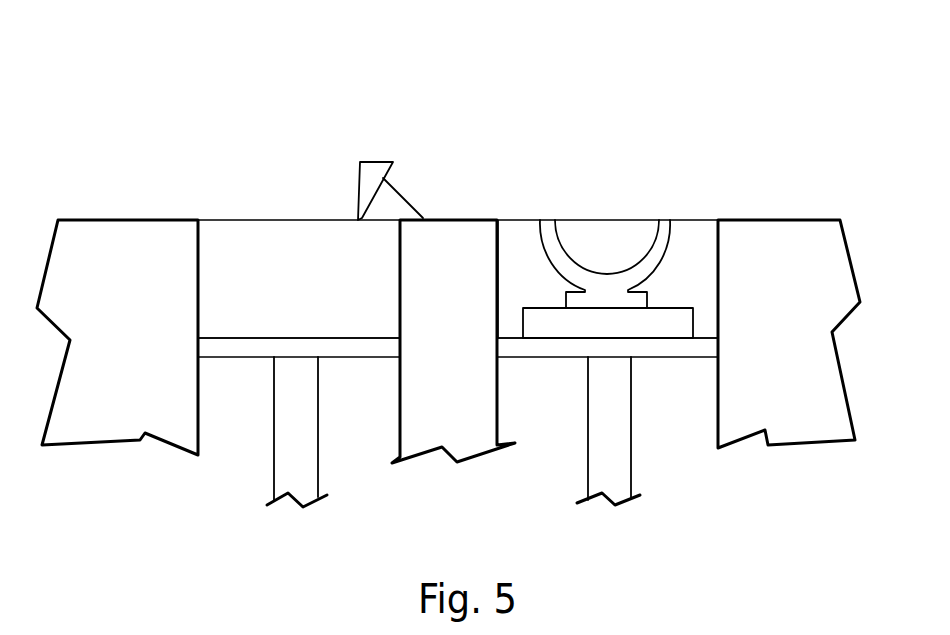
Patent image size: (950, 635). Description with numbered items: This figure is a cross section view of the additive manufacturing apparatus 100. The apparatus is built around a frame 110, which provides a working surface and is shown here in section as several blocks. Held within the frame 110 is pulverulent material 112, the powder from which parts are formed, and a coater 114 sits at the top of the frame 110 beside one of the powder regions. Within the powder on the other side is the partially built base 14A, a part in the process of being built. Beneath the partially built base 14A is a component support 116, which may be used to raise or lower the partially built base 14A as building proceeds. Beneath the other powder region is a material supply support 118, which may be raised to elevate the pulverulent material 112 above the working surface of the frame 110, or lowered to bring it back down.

The additive manufacturing apparatus 100 is at (733, 117).
The frame 110 is at (138, 328).
The pulverulent material 112 is at (698, 238).
The coater 114 is at (367, 162).
The partially built base 14A is at (668, 230).
The component support 116 is at (663, 338).
The material supply support 118 is at (287, 443).